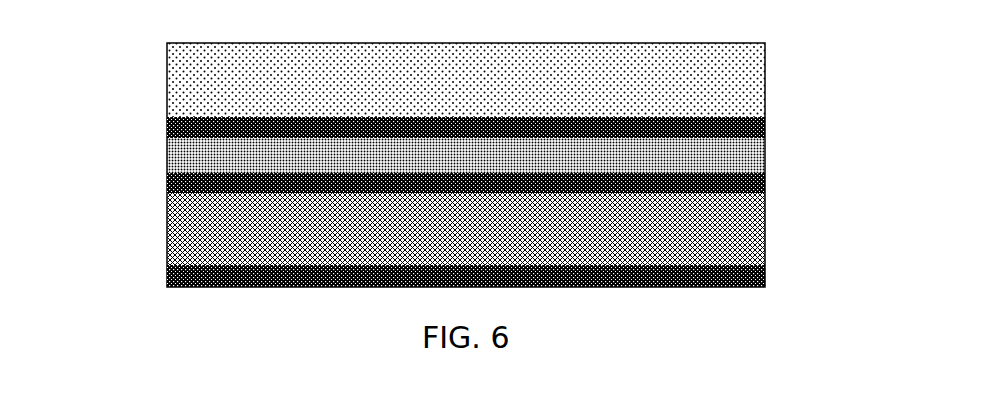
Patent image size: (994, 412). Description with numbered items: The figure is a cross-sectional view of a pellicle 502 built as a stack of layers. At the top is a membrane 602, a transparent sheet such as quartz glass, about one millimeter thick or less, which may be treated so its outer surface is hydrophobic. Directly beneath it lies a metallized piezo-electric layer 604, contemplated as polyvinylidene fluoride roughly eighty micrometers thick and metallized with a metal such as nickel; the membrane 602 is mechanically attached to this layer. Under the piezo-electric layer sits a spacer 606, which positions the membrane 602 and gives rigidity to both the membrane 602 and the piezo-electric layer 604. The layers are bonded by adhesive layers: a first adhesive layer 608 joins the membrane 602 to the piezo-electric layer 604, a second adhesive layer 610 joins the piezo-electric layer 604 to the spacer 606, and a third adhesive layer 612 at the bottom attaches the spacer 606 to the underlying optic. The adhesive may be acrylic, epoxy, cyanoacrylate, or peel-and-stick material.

The pellicle 502 is at (889, 73).
The membrane 602 is at (167, 83).
The metallized piezo-electric layer 604 is at (167, 158).
The spacer 606 is at (167, 233).
The first adhesive layer 608 is at (765, 127).
The second adhesive layer 610 is at (765, 183).
The third adhesive layer 612 is at (765, 268).